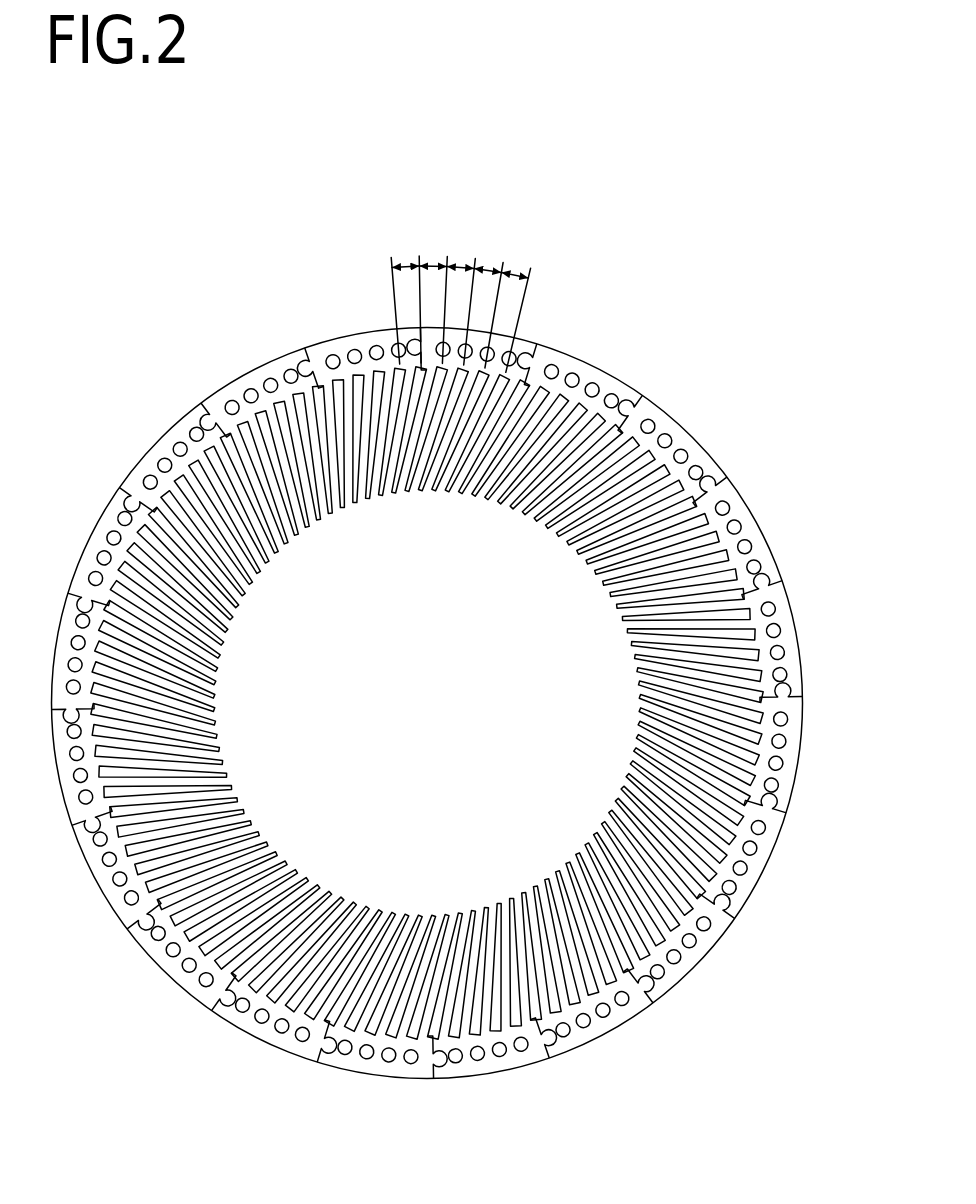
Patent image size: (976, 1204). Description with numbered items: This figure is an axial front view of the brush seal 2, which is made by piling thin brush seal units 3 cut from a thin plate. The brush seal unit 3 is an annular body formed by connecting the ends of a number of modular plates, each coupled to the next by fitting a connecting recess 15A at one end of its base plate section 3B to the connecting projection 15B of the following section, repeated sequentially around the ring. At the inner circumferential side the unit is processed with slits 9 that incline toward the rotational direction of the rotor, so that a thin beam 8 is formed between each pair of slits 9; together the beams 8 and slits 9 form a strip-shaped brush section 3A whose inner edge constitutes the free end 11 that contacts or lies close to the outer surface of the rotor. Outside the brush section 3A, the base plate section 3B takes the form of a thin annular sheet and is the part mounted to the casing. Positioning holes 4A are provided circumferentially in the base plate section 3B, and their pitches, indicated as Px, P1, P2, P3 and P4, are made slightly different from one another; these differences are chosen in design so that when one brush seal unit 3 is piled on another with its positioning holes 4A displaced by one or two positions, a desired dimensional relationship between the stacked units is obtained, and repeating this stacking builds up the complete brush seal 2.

The brush seal 2 is at (693, 278).
The brush seal unit 3 is at (762, 867).
The brush section 3A is at (670, 625).
The base plate section 3B is at (795, 622).
The positioning holes 4A is at (609, 395).
The beam 8 is at (431, 440).
The slits 9 is at (237, 497).
The free end 11 is at (523, 510).
The connecting recess 15A is at (632, 404).
The connecting projection 15B is at (712, 481).
The pitch Px is at (405, 301).
The pitch P1 is at (433, 301).
The pitch P2 is at (461, 302).
The pitch P3 is at (488, 305).
The pitch P4 is at (515, 308).